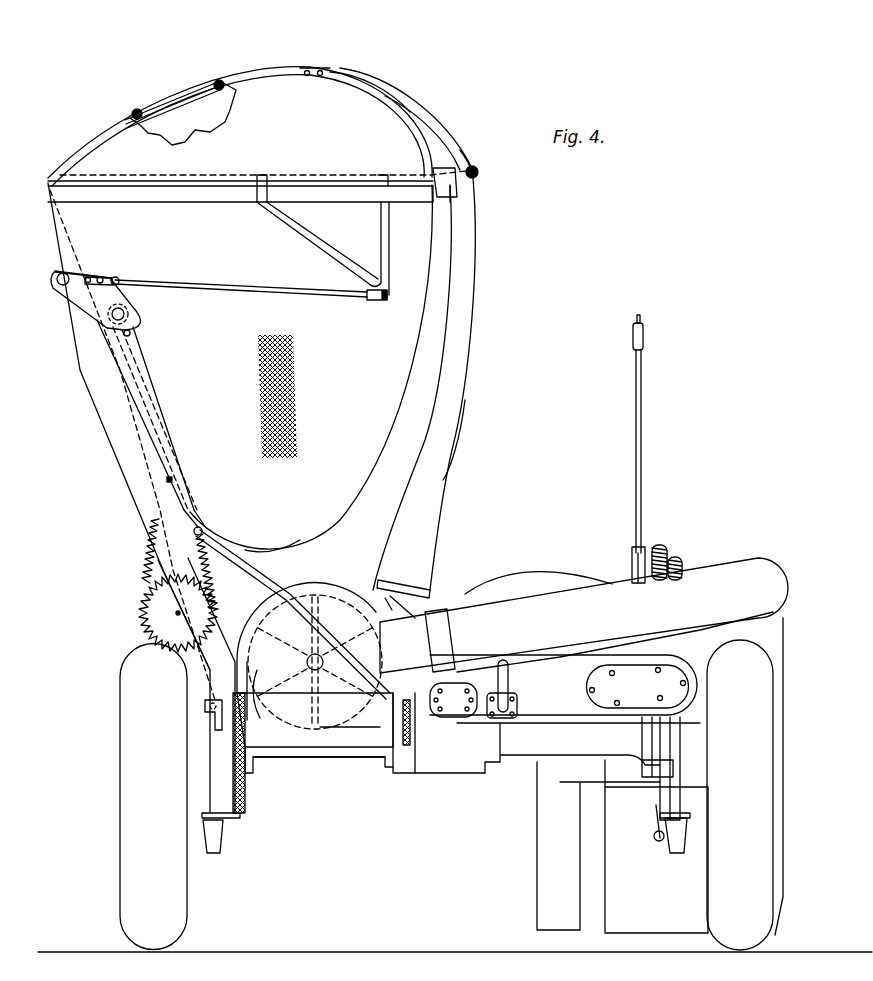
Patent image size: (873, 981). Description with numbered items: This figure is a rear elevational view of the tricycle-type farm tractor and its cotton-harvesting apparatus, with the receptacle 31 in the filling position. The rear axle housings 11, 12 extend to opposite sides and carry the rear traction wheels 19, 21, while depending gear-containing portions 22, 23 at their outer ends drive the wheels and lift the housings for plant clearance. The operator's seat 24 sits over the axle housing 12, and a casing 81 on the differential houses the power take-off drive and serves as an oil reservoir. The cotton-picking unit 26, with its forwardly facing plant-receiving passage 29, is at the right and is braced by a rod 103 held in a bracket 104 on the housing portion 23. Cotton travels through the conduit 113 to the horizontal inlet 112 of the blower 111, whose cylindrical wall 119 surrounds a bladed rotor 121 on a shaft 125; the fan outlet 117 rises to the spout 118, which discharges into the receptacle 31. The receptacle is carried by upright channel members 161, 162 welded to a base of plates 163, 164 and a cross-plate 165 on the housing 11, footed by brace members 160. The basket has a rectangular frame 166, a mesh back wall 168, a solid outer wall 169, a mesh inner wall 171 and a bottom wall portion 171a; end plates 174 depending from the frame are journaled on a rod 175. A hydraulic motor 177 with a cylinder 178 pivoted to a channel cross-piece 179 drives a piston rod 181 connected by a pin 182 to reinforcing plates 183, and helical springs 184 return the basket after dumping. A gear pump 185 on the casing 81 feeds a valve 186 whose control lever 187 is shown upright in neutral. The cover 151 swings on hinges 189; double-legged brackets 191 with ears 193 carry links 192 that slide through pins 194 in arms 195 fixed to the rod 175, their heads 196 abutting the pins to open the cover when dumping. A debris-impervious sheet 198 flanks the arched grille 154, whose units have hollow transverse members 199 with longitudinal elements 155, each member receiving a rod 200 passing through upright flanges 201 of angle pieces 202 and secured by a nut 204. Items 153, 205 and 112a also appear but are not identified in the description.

The rear axle housing 11 is at (325, 753).
The rear axle housing 12 is at (527, 750).
The rear traction wheel 19 is at (140, 857).
The rear traction wheel 21 is at (763, 912).
The depending gear containing portion 22 is at (246, 806).
The depending gear containing portion 23 is at (677, 787).
The operator's seat 24 is at (522, 586).
The cotton-picking unit 26 is at (660, 927).
The plant receiving passage 29 is at (605, 872).
The receptacle 31 is at (428, 360).
The casing 81 is at (567, 716).
The rod 103 is at (660, 838).
The bracket 104 is at (658, 827).
The blower 111 is at (313, 582).
The horizontal inlet 112 is at (400, 628).
The pulley shaft 112a is at (324, 722).
The conduit 113 is at (497, 642).
The fan outlet 117 is at (425, 602).
The spout 118 is at (440, 477).
The cylindrical wall 119 is at (257, 615).
The bladed rotor 121 is at (402, 581).
The shaft 125 is at (347, 760).
The cover 151 is at (330, 56).
The right track rail 153 is at (425, 135).
The arched grille 154 is at (197, 86).
The longitudinal elements 155 is at (447, 147).
The brace members 160 is at (258, 584).
The channel member 161 is at (127, 460).
The channel member 162 is at (133, 475).
The backwardly extending plate 163 is at (403, 747).
The frame member 164 is at (240, 813).
The cross-plate 165 is at (350, 740).
The rectangular frame 166 is at (418, 195).
The back wall 168 is at (413, 402).
The outer wall 169 is at (158, 423).
The inner wall 171 is at (410, 425).
The bottom wall portion 171a is at (263, 550).
The end plate 174 is at (118, 212).
The rod 175 is at (58, 287).
The hydraulic ram 177 is at (167, 583).
The cylinder 178 is at (200, 665).
The channel cross-piece 179 is at (213, 717).
The piston rod 181 is at (170, 482).
The pin 182 is at (130, 333).
The reinforcing plates 183 is at (130, 373).
The helical springs 184 is at (153, 552).
The gear pump casing 185 is at (437, 716).
The valve 186 is at (519, 709).
The control lever 187 is at (510, 684).
The hinges 189 is at (437, 180).
The double-legged brackets 191 is at (387, 262).
The links 192 is at (283, 288).
The ears 193 is at (390, 288).
The pins 194 is at (113, 280).
The arms 195 is at (102, 277).
The heads 196 is at (83, 280).
The debris-impervious sheet 198 is at (353, 102).
The transverse member 199 is at (479, 172).
The rod 200 is at (140, 110).
The upright flanges 201 is at (280, 66).
The angle pieces 202 is at (270, 92).
The nut 204 is at (307, 78).
The rail end 205 is at (467, 156).